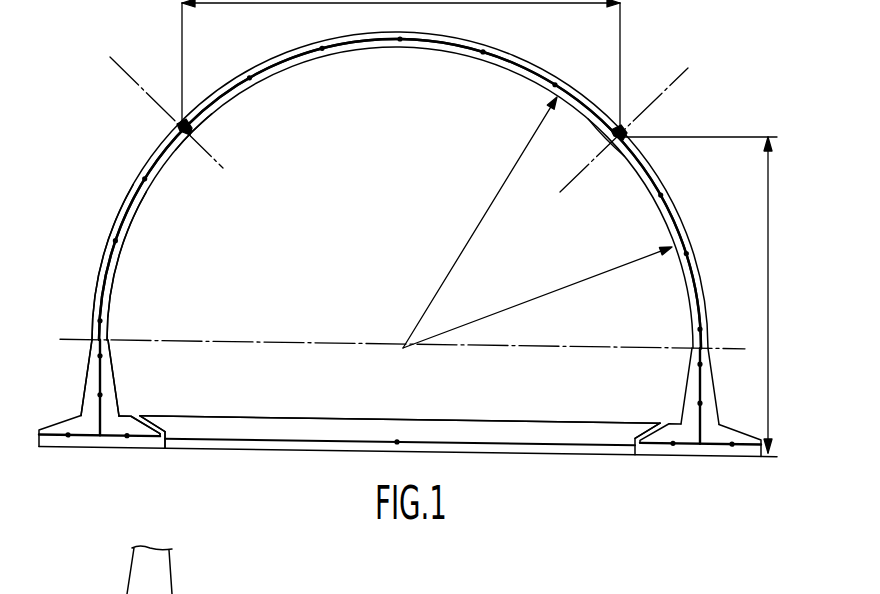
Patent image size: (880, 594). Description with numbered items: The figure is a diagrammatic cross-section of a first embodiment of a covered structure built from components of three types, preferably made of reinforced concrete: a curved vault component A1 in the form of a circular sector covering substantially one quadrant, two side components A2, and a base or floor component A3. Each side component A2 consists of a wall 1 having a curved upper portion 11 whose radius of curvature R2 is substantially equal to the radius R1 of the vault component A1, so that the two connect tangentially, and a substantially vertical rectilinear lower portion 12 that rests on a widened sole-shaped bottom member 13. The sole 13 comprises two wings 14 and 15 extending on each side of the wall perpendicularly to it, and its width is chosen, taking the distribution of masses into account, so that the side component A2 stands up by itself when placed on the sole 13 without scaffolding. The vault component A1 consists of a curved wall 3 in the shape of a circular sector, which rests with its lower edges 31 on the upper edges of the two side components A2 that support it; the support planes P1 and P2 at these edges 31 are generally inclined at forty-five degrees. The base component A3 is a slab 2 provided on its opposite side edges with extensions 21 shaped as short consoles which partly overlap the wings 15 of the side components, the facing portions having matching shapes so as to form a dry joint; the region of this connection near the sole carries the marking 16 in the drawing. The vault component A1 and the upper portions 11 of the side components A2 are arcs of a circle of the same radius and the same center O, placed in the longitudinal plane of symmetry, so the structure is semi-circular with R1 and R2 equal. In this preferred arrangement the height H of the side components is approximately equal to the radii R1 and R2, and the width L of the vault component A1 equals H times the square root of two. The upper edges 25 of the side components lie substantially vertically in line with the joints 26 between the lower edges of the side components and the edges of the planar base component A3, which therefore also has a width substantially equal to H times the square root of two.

The wall 1 is at (109, 290).
The slab 2 is at (305, 414).
The curved wall 3 is at (410, 49).
The curved upper portion 11 is at (124, 197).
The rectilinear lower portion 12 is at (109, 358).
The sole-shaped bottom member 13 is at (122, 449).
The wing 14 is at (58, 423).
The wing 15 is at (119, 413).
The joint at plane P1 16 is at (166, 164).
The extension 21 is at (134, 416).
The upper edge 25 is at (632, 141).
The joint 26 is at (157, 446).
The lower edge 31 is at (184, 124).
The vault component A1 is at (281, 55).
The side component A2 is at (129, 230).
The base component A3 is at (371, 418).
The support plane P1 is at (155, 98).
The support plane P2 is at (641, 117).
The center O is at (402, 331).
The radius of curvature R1 is at (480, 222).
The radius of curvature R2 is at (537, 297).
The width L is at (401, 66).
The height H is at (701, 295).